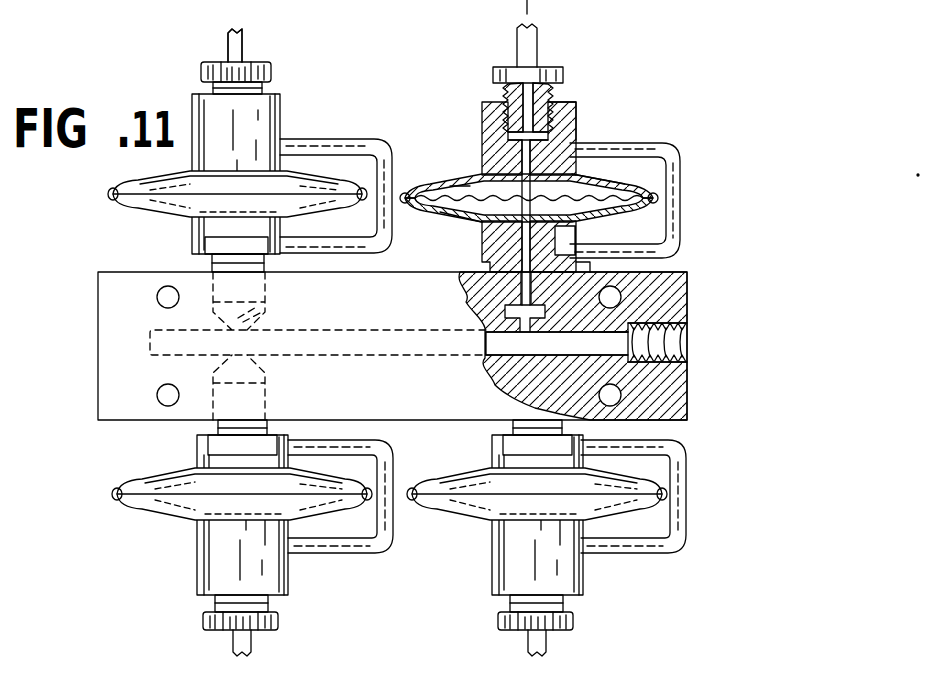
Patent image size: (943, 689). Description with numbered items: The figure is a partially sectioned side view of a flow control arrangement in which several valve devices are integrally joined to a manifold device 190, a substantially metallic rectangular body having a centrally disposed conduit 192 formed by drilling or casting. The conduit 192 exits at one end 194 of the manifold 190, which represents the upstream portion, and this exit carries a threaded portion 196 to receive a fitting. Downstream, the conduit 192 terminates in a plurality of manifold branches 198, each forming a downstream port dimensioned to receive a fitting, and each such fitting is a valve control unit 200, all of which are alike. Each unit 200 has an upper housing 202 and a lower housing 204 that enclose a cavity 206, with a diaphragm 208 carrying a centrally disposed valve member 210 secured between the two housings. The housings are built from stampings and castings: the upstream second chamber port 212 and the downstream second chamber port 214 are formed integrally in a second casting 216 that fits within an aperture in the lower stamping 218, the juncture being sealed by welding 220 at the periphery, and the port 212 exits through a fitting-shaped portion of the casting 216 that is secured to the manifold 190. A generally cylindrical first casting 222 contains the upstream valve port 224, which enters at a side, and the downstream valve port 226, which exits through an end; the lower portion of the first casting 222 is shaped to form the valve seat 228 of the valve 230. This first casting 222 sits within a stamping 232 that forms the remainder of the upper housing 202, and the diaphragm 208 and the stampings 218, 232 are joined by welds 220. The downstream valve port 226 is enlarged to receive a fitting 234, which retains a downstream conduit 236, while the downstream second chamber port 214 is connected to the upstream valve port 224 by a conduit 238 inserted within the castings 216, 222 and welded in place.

The manifold device 190 is at (700, 420).
The conduit 192 is at (656, 304).
The end of the manifold 194 is at (690, 340).
The threaded portion 196 is at (690, 362).
The manifold branches 198 is at (276, 306).
The valve control unit 200 is at (618, 583).
The upper housing 202 is at (643, 186).
The lower housing 204 is at (656, 220).
The cavity 206 is at (456, 176).
The diaphragm 208 is at (475, 211).
The valve member 210 is at (544, 203).
The upstream second chamber port 212 is at (488, 266).
The downstream second chamber port 214 is at (666, 272).
The second casting 216 is at (544, 322).
The lower stamping 218 is at (460, 224).
The welding 220 is at (632, 229).
The first casting 222 is at (565, 107).
The upstream valve port 224 is at (626, 172).
The downstream valve port 226 is at (483, 127).
The valve seat 228 is at (586, 150).
The valve 230 is at (463, 184).
The stamping 232 is at (242, 47).
The fitting 234 is at (548, 70).
The downstream conduit 236 is at (535, 52).
The conduit 238 is at (358, 144).